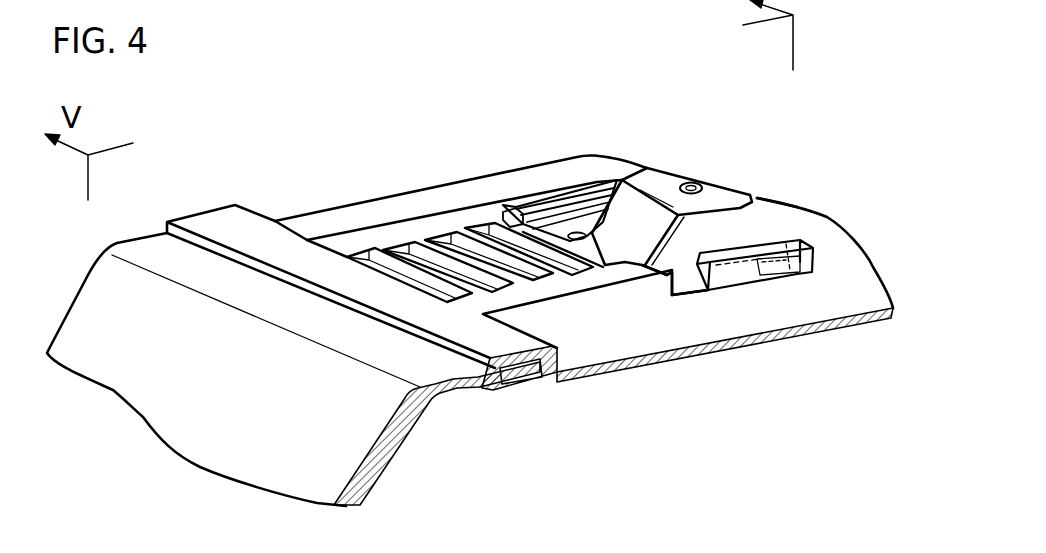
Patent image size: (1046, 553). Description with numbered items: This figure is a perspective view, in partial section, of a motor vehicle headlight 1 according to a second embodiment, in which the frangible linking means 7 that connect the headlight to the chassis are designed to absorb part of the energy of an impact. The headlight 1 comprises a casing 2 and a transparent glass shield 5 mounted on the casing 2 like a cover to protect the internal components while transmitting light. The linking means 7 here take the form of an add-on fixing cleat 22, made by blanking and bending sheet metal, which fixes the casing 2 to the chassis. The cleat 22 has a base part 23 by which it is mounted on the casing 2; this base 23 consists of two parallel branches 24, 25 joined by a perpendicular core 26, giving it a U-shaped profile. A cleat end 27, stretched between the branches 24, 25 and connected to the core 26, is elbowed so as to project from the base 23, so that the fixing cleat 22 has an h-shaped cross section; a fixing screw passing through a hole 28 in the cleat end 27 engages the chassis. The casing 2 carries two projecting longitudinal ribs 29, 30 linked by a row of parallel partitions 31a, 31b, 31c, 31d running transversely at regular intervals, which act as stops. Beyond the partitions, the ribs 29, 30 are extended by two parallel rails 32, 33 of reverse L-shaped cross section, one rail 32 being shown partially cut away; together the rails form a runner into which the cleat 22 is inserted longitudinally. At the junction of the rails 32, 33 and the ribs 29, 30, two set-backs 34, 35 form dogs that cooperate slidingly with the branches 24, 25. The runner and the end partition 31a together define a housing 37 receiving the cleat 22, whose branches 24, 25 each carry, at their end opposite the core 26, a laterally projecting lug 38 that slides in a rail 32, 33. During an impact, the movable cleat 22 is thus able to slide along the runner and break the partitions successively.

The headlight 1 is at (323, 103).
The casing 2 is at (853, 267).
The transparent glass shield 5 is at (184, 420).
The frangible linking means 7 is at (416, 212).
The fixing cleat 22 is at (688, 171).
The base part 23 is at (562, 243).
The branch 24 is at (673, 262).
The branch 25 is at (574, 231).
The core 26 is at (605, 238).
The cleat end 27 is at (665, 185).
The hole 28 is at (693, 185).
The longitudinal rib 29 is at (499, 302).
The longitudinal rib 30 is at (302, 214).
The end partition 31a is at (596, 267).
The partition 31b is at (540, 270).
The partition 31c is at (447, 247).
The partition 31d is at (392, 246).
The rail 32 is at (728, 280).
The rail 33 is at (607, 214).
The set-back 34 is at (623, 268).
The set-back 35 is at (518, 228).
The housing 37 is at (757, 232).
The lug 38 is at (787, 277).